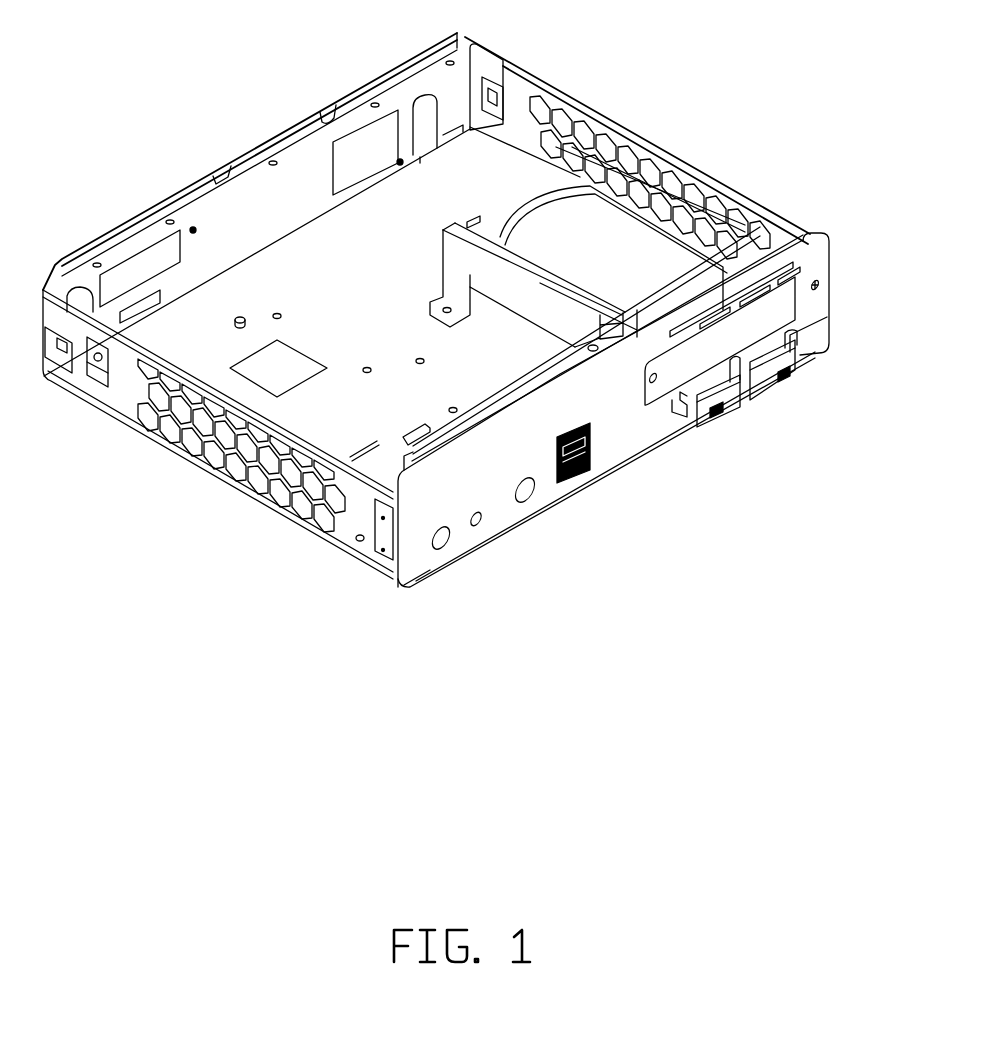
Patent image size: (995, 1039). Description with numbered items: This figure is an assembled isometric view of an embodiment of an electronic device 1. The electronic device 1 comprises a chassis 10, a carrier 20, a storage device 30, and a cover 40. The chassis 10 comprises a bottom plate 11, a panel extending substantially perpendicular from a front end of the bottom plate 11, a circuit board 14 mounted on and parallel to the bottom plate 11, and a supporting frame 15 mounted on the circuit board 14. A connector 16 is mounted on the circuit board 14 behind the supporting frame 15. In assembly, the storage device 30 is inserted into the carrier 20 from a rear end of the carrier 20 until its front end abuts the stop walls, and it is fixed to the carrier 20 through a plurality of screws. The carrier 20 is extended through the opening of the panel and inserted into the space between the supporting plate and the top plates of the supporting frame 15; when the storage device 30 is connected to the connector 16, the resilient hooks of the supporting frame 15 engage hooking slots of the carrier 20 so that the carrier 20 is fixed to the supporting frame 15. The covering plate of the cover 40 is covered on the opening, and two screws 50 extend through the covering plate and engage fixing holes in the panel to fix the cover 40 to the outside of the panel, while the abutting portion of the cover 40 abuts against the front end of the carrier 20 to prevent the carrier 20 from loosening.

The electronic device 1 is at (587, 71).
The chassis 10 is at (497, 500).
The bottom plate 11 is at (447, 575).
The circuit board 14 is at (287, 273).
The supporting frame 15 is at (615, 180).
The connector 16 is at (533, 170).
The carrier 20 is at (757, 227).
The storage device 30 is at (638, 250).
The cover 40 is at (683, 372).
The screws 50 is at (821, 283).